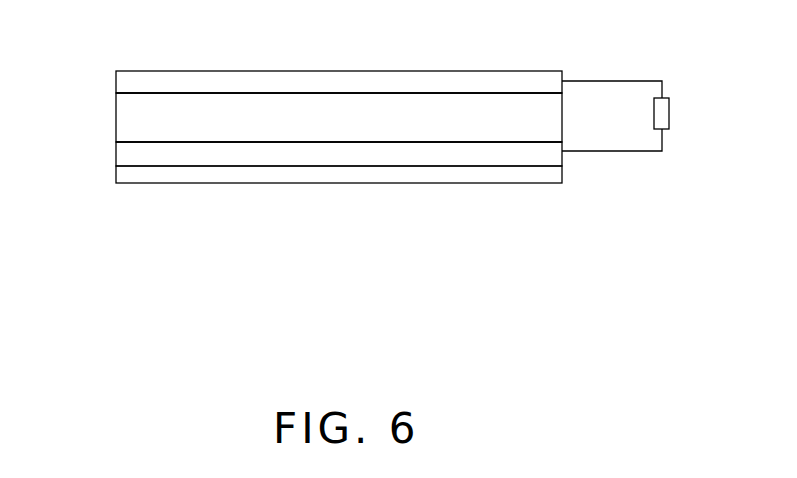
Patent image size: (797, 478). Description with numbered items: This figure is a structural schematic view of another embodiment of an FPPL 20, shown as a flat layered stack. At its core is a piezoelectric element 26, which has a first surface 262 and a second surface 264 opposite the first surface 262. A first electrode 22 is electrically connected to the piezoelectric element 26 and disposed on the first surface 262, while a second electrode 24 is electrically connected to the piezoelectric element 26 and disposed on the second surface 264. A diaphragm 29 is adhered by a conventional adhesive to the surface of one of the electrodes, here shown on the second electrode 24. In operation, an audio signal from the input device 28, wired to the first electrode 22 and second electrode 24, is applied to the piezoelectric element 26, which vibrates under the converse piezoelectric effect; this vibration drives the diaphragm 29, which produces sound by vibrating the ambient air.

The FPPL 20 is at (287, 129).
The first electrode 22 is at (125, 82).
The piezoelectric element 26 is at (125, 119).
The second electrode 24 is at (123, 158).
The diaphragm 29 is at (312, 178).
The first surface 262 is at (241, 92).
The second surface 264 is at (304, 144).
The audio signal input device 28 is at (669, 114).